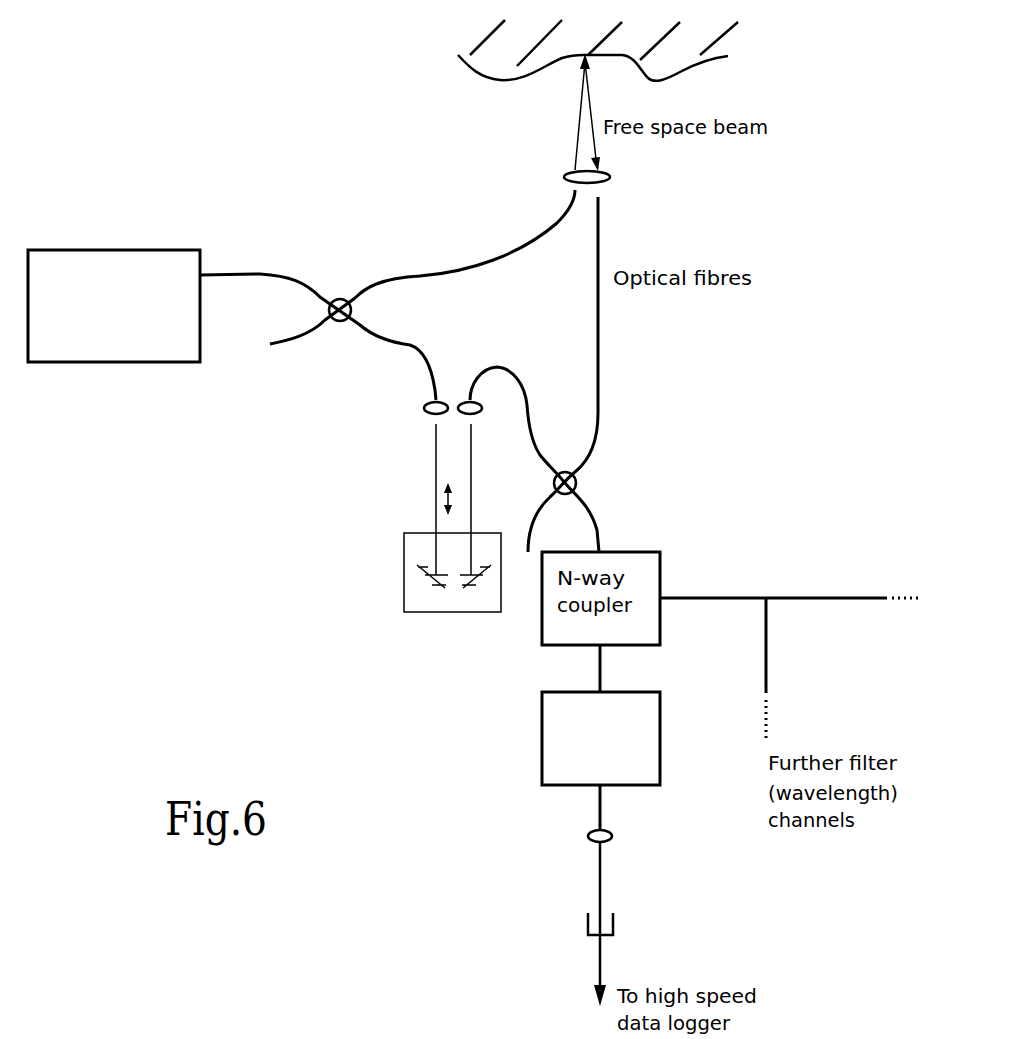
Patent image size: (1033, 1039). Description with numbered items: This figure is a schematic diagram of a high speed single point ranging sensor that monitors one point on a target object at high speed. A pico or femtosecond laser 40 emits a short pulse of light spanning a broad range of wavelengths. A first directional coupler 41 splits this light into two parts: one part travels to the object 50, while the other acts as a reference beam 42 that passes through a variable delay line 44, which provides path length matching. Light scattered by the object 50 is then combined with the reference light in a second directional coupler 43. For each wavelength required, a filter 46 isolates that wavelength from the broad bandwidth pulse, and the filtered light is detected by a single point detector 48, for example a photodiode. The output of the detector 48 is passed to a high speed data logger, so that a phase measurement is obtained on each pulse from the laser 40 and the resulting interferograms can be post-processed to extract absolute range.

The laser 40 is at (112, 260).
The first directional coupler 41 is at (335, 332).
The reference beam 42 is at (422, 433).
The second directional coupler 43 is at (588, 484).
The variable delay line 44 is at (391, 622).
The filter 46 is at (547, 726).
The single point detector 48 is at (621, 918).
The object 50 is at (479, 72).